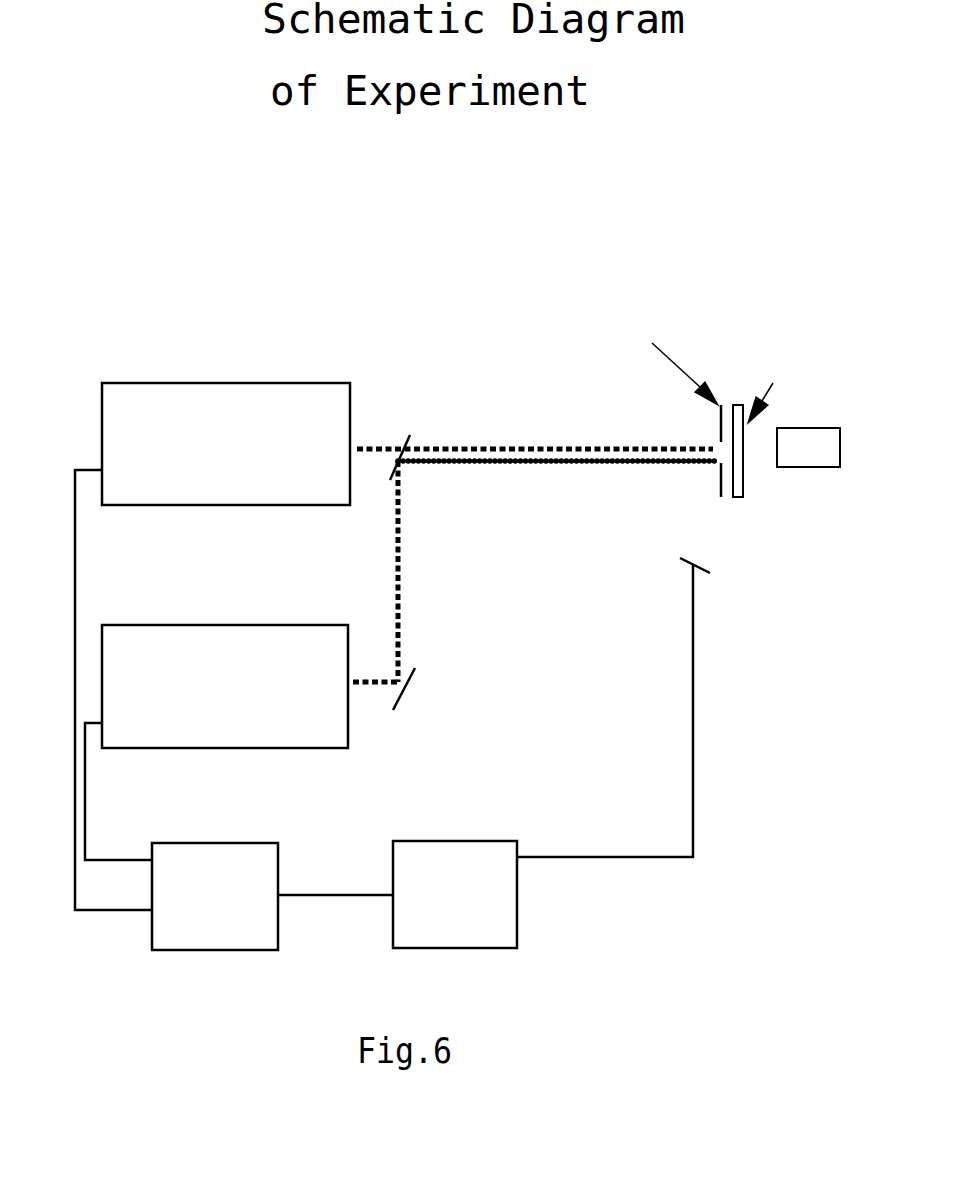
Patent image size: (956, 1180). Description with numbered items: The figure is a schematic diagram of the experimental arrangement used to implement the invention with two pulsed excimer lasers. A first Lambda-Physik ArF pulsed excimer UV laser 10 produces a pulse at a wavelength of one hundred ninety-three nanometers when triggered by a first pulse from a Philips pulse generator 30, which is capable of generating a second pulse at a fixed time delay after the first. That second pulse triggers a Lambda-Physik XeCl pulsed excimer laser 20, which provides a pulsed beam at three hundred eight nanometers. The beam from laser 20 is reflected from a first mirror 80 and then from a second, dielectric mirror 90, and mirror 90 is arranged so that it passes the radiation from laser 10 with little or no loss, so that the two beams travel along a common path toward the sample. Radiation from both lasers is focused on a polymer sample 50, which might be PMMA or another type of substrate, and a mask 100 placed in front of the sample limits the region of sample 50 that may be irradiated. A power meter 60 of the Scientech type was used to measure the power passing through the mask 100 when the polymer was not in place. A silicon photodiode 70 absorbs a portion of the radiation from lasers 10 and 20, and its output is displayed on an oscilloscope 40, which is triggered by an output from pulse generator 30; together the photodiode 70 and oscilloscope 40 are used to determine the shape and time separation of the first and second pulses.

The ArF pulsed excimer UV laser 10 is at (338, 413).
The XeCl pulsed excimer laser 20 is at (340, 655).
The pulse generator 30 is at (268, 870).
The oscilloscope 40 is at (510, 864).
The polymer sample 50 is at (782, 414).
The power meter 60 is at (832, 462).
The silicon photodiode 70 is at (733, 573).
The first mirror 80 is at (409, 690).
The dielectric mirror 90 is at (391, 453).
The mask 100 is at (667, 406).